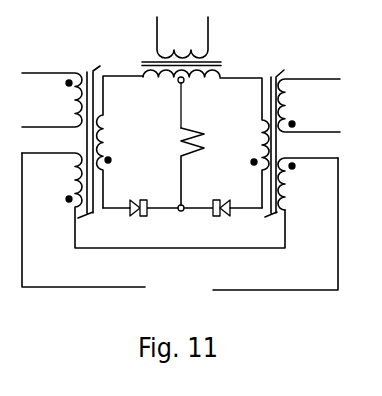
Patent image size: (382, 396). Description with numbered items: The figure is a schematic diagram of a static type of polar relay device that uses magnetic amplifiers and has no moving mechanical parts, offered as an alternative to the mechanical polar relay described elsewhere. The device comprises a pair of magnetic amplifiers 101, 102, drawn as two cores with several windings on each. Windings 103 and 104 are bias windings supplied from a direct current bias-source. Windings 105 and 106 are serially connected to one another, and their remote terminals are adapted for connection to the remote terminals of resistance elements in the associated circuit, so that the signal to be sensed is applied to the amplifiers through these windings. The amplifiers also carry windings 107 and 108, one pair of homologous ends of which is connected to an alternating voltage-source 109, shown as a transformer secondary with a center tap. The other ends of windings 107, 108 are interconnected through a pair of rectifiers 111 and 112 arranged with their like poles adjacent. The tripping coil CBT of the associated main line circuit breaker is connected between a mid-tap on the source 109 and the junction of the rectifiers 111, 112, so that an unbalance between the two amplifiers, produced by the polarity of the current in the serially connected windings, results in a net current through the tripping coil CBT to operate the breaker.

The magnetic amplifier 101 is at (91, 65).
The magnetic amplifier 102 is at (274, 68).
The winding 103 is at (72, 107).
The winding 104 is at (288, 98).
The winding 105 is at (72, 177).
The winding 106 is at (288, 191).
The winding 107 is at (105, 140).
The winding 108 is at (256, 133).
The alternating voltage-source 109 is at (198, 83).
The rectifier 111 is at (137, 217).
The rectifier 112 is at (220, 219).
The tripping coil CBT is at (208, 146).